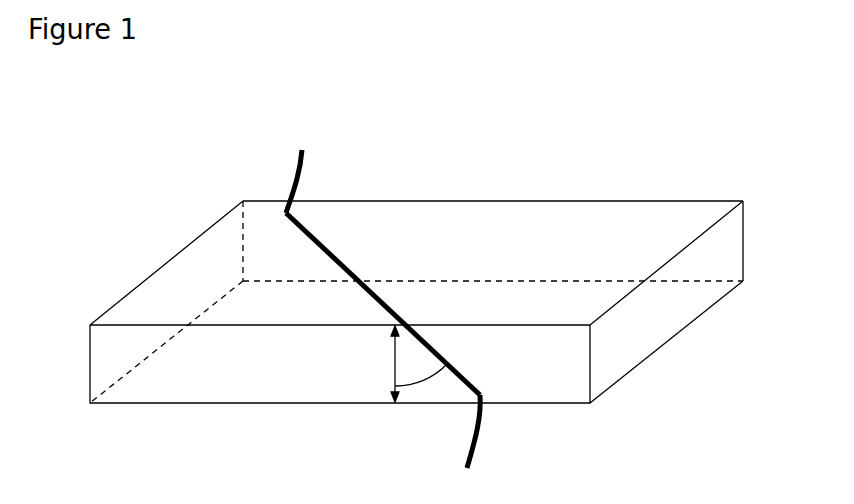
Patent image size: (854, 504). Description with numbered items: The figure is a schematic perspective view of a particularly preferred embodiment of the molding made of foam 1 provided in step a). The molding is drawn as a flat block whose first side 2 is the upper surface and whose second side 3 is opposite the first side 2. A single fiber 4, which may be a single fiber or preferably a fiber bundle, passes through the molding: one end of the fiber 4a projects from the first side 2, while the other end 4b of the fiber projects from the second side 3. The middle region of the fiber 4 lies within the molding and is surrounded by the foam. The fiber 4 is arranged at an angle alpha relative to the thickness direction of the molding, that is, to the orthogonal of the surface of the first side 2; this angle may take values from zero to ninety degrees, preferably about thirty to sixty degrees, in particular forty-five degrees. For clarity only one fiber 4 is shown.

The molding made of foam 1 is at (457, 298).
The first side of the molding 2 is at (168, 282).
The second side of the molding 3 is at (547, 405).
The fiber 4 is at (383, 314).
The end of the fiber 4a is at (305, 171).
The other end of the fiber 4b is at (460, 443).